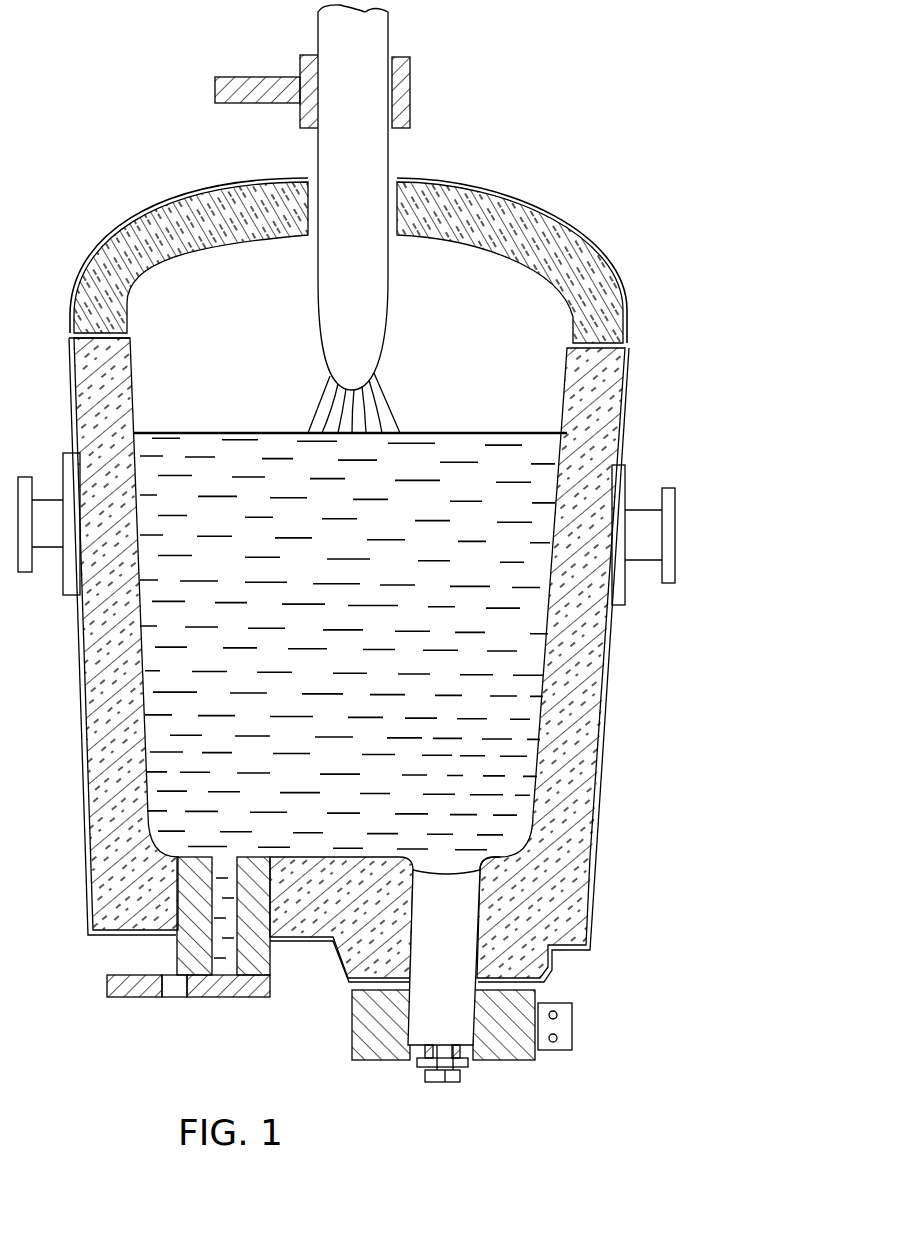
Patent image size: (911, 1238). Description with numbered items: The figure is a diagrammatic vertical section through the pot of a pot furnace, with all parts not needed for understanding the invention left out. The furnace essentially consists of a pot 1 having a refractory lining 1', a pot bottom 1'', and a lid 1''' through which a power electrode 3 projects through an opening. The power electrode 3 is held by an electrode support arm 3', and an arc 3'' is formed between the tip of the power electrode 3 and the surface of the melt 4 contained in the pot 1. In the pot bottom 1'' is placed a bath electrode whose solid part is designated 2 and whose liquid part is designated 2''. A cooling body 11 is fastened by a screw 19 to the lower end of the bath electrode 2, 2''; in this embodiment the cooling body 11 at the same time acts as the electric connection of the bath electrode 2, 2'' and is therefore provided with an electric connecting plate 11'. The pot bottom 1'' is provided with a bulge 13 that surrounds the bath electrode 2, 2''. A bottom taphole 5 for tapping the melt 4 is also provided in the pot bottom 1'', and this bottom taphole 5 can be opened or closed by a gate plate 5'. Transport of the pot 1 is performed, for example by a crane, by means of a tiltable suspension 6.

The pot 1 is at (377, 660).
The refractory lining 1' is at (341, 957).
The pot bottom 1'' is at (340, 999).
The lid 1''' is at (351, 260).
The solid part of the bath electrode 2 is at (424, 1008).
The liquid part of the bath electrode 2'' is at (567, 855).
The power electrode 3 is at (400, 197).
The electrode support arm 3' is at (312, 74).
The arc 3'' is at (501, 403).
The melt 4 is at (478, 680).
The bottom taphole 5 is at (211, 968).
The gate plate 5' is at (188, 957).
The tiltable suspension 6 is at (642, 540).
The cooling body 11 is at (443, 1068).
The electric connecting plate 11' is at (564, 1075).
The bulge 13 is at (513, 960).
The screw 19 is at (441, 1082).